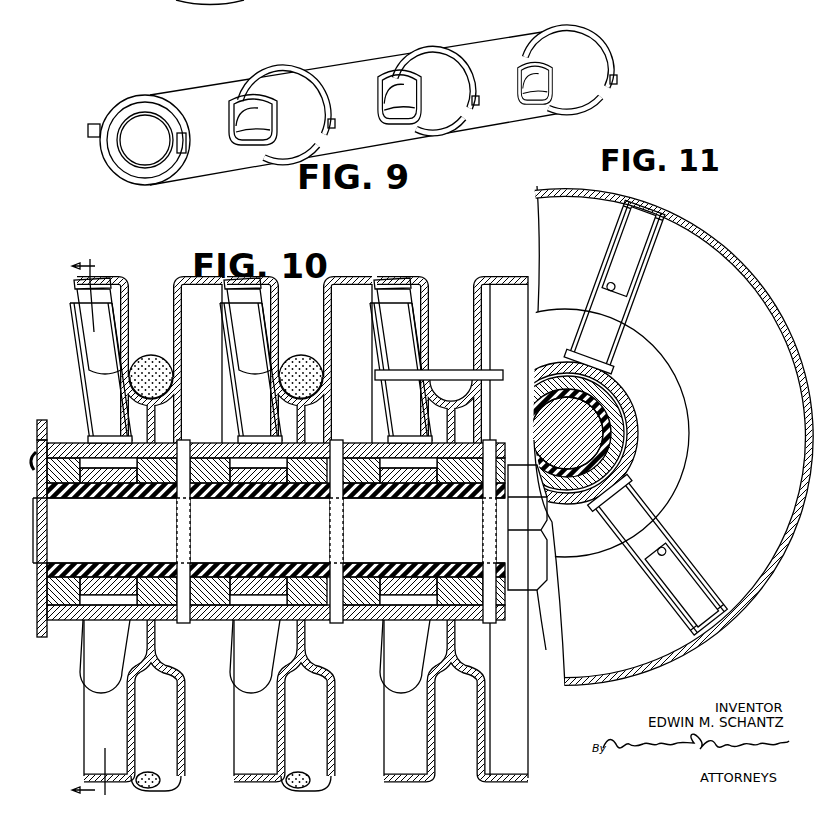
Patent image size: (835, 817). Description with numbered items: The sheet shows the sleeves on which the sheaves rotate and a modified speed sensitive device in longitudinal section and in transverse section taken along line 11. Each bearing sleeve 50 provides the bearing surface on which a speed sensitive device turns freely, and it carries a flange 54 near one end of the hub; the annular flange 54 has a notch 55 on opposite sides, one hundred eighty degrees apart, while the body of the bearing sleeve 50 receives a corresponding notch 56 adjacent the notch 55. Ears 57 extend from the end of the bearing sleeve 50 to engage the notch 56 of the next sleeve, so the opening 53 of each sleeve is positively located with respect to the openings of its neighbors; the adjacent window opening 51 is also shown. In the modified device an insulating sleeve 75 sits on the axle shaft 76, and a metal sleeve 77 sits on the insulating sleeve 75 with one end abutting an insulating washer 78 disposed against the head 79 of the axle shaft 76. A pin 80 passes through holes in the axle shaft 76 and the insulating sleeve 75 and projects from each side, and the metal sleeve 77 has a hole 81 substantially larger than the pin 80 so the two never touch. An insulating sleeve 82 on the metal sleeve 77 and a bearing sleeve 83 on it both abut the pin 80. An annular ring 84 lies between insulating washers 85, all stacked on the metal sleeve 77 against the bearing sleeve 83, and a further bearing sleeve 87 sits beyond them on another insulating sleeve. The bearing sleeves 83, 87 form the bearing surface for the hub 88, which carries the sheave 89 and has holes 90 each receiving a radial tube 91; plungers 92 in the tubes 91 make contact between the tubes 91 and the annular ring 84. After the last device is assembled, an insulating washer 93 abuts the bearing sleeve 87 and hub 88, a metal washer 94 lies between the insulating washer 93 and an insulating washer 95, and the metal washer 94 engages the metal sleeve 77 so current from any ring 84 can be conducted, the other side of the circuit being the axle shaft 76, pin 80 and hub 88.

In FIG. 10, the section line 11— 11 is at (73, 529).
In FIG. 9, the bearing sleeve 50 is at (272, 104).
In FIG. 9, the window opening 51 is at (238, 130).
In FIG. 9, the opening 53 is at (245, 97).
In FIG. 9, the flange 54 is at (292, 68).
In FIG. 9, the notch 55 is at (336, 123).
In FIG. 9, the notch 56 is at (318, 142).
In FIG. 9, the ears 57 is at (186, 148).
In FIG. 10, the insulating sleeve 75 is at (438, 492).
In FIG. 11, the insulating sleeve 75 is at (615, 446).
In FIG. 10, the axle shaft 76 is at (245, 520).
In FIG. 11, the axle shaft 76 is at (555, 350).
In FIG. 10, the metal sleeve 77 is at (118, 490).
In FIG. 11, the metal sleeve 77 is at (615, 425).
In FIG. 10, the insulating washer 78 is at (510, 497).
In FIG. 10, the head 79 is at (535, 592).
In FIG. 10, the pin 80 is at (188, 443).
In FIG. 10, the hole 81 is at (195, 490).
In FIG. 10, the insulating sleeve 82 is at (158, 492).
In FIG. 10, the bearing sleeve 83 is at (360, 492).
In FIG. 10, the annular ring 84 is at (100, 490).
In FIG. 11, the annular ring 84 is at (628, 393).
In FIG. 10, the insulating washers 85 is at (78, 486).
In FIG. 10, the bearing sleeve 87 is at (165, 447).
In FIG. 10, the hub 88 is at (340, 447).
In FIG. 11, the hub 88 is at (620, 375).
In FIG. 10, the sheave 89 is at (173, 305).
In FIG. 11, the sheave 89 is at (739, 256).
In FIG. 10, the holes 90 is at (124, 441).
In FIG. 11, the holes 90 is at (601, 366).
In FIG. 10, the tube 91 is at (120, 407).
In FIG. 11, the tube 91 is at (628, 330).
In FIG. 10, the plungers 92 is at (96, 282).
In FIG. 11, the plungers 92 is at (645, 273).
In FIG. 10, the insulating washer 93 is at (46, 440).
In FIG. 10, the metal washer 94 is at (47, 423).
In FIG. 10, the insulating washer 95 is at (34, 452).